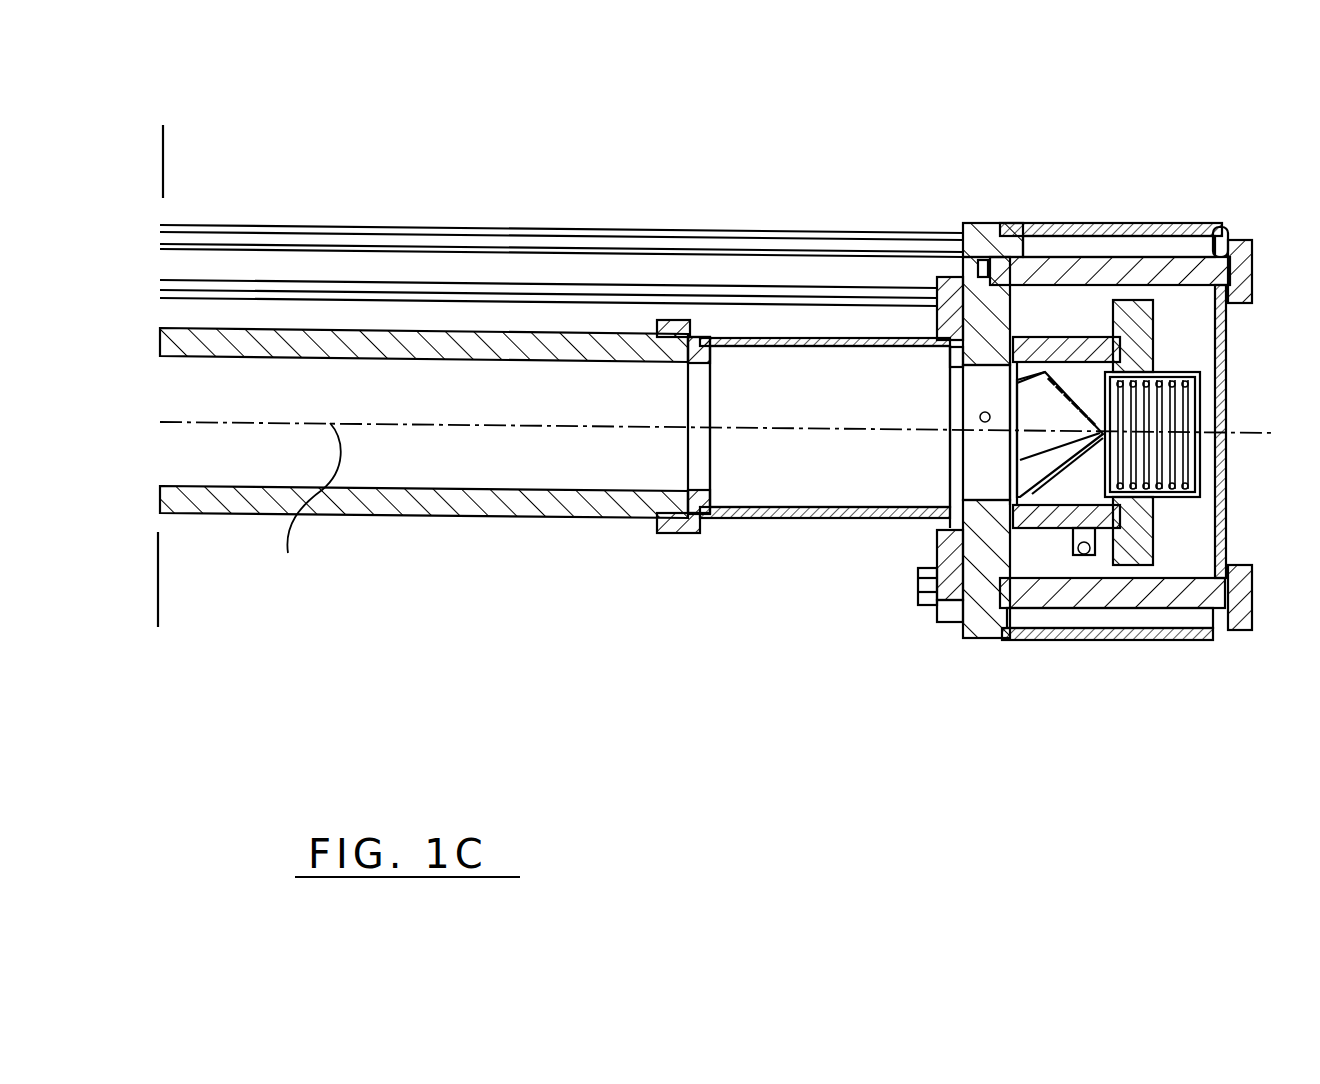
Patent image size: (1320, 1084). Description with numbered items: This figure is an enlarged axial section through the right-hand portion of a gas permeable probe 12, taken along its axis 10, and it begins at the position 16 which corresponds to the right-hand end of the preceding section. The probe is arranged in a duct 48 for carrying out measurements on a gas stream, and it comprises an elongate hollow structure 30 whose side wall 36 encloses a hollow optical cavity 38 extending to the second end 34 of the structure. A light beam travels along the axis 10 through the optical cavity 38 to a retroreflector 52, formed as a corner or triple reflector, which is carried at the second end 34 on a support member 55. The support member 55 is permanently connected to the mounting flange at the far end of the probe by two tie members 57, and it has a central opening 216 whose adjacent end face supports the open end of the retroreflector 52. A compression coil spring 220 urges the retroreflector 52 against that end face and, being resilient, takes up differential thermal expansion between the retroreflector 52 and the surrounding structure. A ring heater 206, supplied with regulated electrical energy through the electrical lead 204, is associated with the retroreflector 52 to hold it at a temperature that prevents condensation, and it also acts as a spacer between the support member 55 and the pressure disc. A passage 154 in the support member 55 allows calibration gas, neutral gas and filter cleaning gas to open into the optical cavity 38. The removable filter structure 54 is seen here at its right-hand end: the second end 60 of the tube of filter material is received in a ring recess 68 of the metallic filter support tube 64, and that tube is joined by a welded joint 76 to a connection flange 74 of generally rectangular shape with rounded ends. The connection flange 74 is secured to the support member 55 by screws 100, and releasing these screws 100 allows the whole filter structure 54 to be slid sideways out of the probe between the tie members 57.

The axis 10 is at (313, 501).
The gas permeable probe 12 is at (432, 525).
The position 16 is at (163, 150).
The elongate hollow structure 30 is at (183, 772).
The second end 34 is at (1012, 206).
The side wall 36 is at (370, 330).
The hollow optical cavity 38 is at (511, 398).
The duct 48 is at (561, 241).
The retroreflector 52 is at (1020, 458).
The filter structure 54 is at (165, 680).
The support member 55 is at (983, 222).
The tie members 57 is at (647, 238).
The second end of the tube of filter material 60 is at (688, 494).
The filter support tube 64 is at (672, 535).
The ring recess 68 is at (645, 510).
The connection flange 74 is at (938, 557).
The welded joint 76 is at (932, 329).
The screws 100 is at (915, 583).
The passage 154 is at (960, 420).
The electrical lead 204 is at (1068, 542).
The ring heater 206 is at (1025, 336).
The central opening 216 is at (950, 383).
The compression coil spring 220 is at (1200, 397).